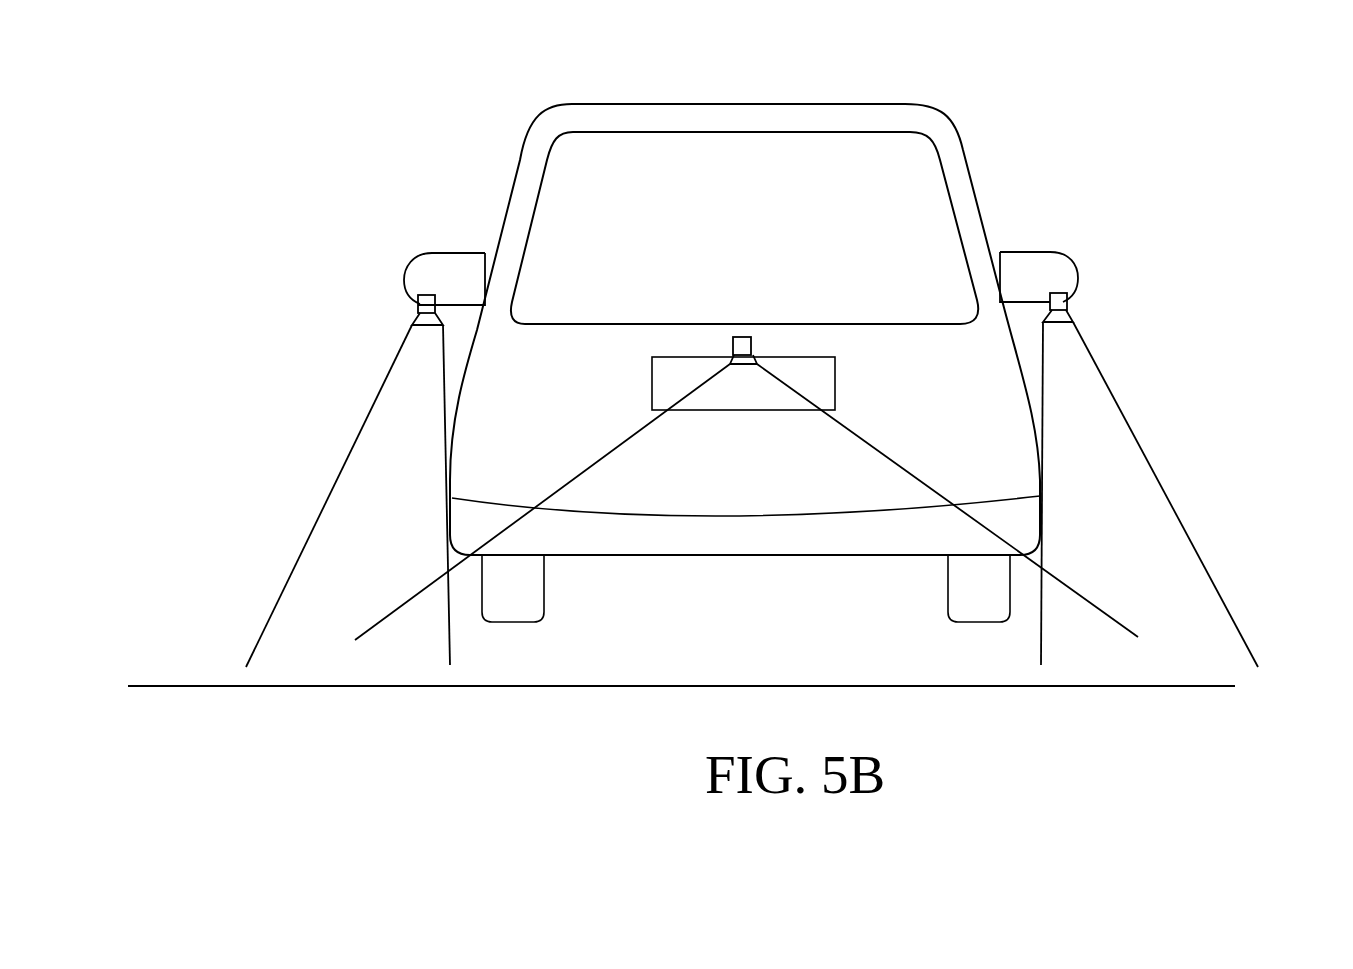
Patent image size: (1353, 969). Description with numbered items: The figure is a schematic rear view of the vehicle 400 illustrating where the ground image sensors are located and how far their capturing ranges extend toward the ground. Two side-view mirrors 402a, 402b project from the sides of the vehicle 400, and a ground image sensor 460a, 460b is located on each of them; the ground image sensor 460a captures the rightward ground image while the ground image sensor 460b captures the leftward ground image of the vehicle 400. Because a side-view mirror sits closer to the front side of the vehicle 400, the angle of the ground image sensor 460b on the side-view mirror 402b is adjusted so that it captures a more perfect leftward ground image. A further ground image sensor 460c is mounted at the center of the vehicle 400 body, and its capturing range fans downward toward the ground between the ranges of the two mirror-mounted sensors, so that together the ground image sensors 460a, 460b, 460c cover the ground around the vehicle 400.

The vehicle 400 is at (818, 103).
The side-view mirror 402a is at (428, 253).
The side-view mirror 402b is at (1068, 253).
The ground image sensor 460a is at (418, 302).
The ground image sensor 460b is at (1068, 300).
The ground image sensor 460c is at (752, 345).